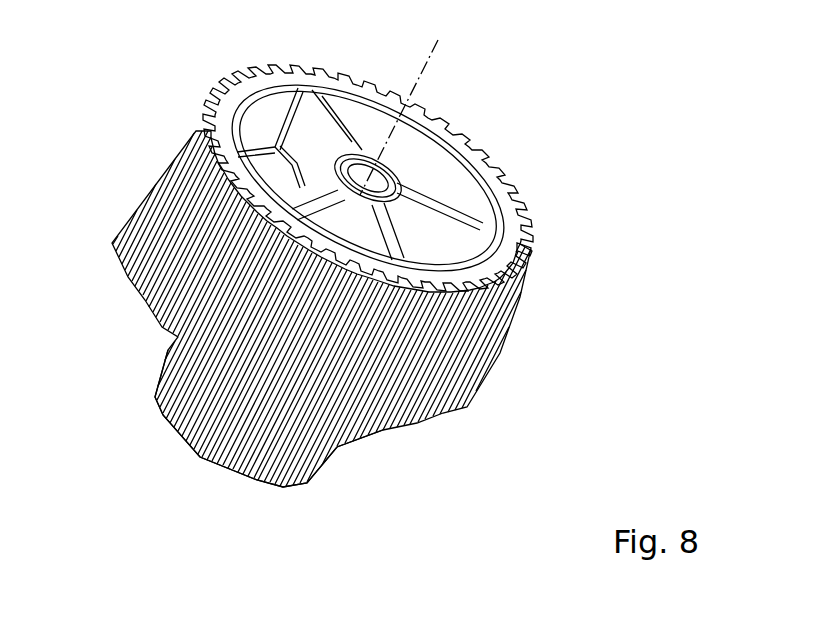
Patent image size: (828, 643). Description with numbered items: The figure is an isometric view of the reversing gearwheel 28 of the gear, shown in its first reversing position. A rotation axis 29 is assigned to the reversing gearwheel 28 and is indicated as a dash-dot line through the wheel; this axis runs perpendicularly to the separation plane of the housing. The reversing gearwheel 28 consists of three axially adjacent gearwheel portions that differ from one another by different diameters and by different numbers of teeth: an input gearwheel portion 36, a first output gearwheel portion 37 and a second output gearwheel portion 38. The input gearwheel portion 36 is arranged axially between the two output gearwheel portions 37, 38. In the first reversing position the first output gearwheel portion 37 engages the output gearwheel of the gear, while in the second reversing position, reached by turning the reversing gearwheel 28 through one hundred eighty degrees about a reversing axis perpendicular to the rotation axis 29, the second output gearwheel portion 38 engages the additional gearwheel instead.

The reversing gearwheel 28 is at (406, 266).
The rotation axis 29 is at (432, 70).
The input gearwheel portion 36 is at (523, 326).
The first output gearwheel portion 37 is at (532, 221).
The second output gearwheel portion 38 is at (337, 440).